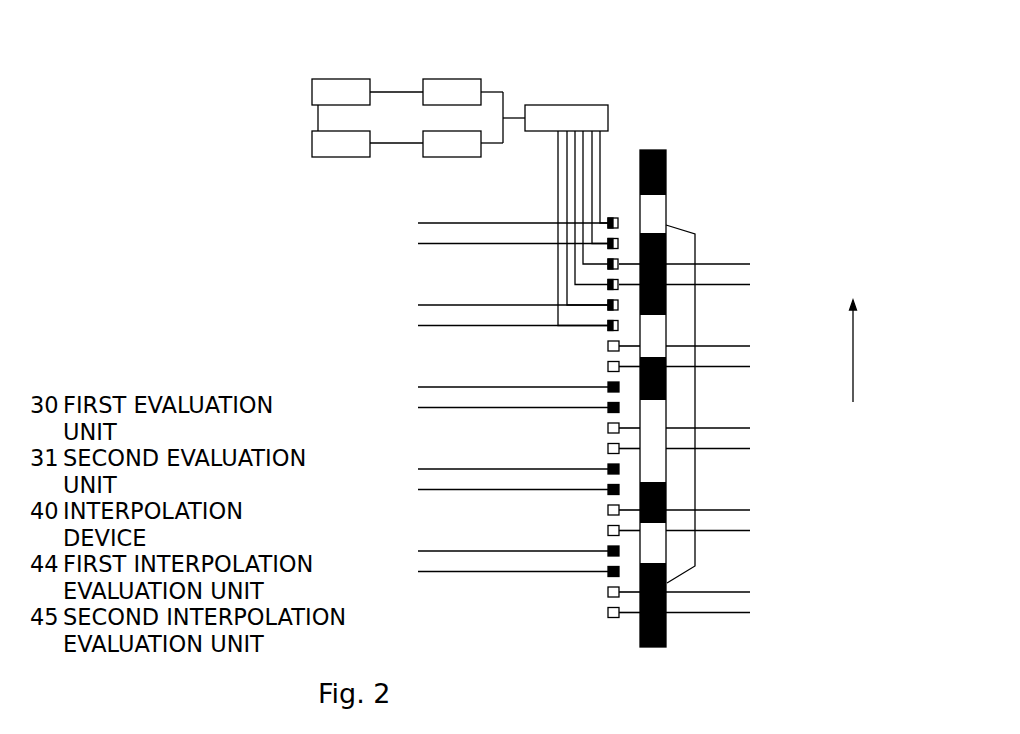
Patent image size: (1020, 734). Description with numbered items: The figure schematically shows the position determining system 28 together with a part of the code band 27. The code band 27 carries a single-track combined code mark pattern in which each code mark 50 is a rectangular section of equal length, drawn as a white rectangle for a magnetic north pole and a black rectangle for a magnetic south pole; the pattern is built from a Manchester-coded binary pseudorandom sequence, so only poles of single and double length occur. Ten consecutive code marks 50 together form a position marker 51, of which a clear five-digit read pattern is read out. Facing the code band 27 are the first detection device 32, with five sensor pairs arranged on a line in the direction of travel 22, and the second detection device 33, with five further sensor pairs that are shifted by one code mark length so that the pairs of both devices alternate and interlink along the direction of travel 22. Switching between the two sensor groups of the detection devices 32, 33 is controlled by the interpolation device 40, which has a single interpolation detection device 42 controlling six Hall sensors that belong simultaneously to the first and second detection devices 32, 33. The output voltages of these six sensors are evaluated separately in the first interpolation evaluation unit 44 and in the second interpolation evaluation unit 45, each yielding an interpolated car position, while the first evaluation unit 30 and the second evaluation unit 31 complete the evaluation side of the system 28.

The direction of travel 22 is at (872, 351).
The code band 27 is at (657, 150).
The position determining system 28 is at (265, 94).
The first evaluation unit 30 is at (340, 78).
The second evaluation unit 31 is at (363, 130).
The first detection device 32 is at (319, 307).
The second detection device 33 is at (797, 232).
The interpolation device 40 is at (480, 166).
The interpolation detection device 42 is at (537, 206).
The first interpolation evaluation unit 44 is at (452, 78).
The second interpolation evaluation unit 45 is at (452, 130).
The code mark 50 is at (666, 217).
The position marker 51 is at (687, 570).